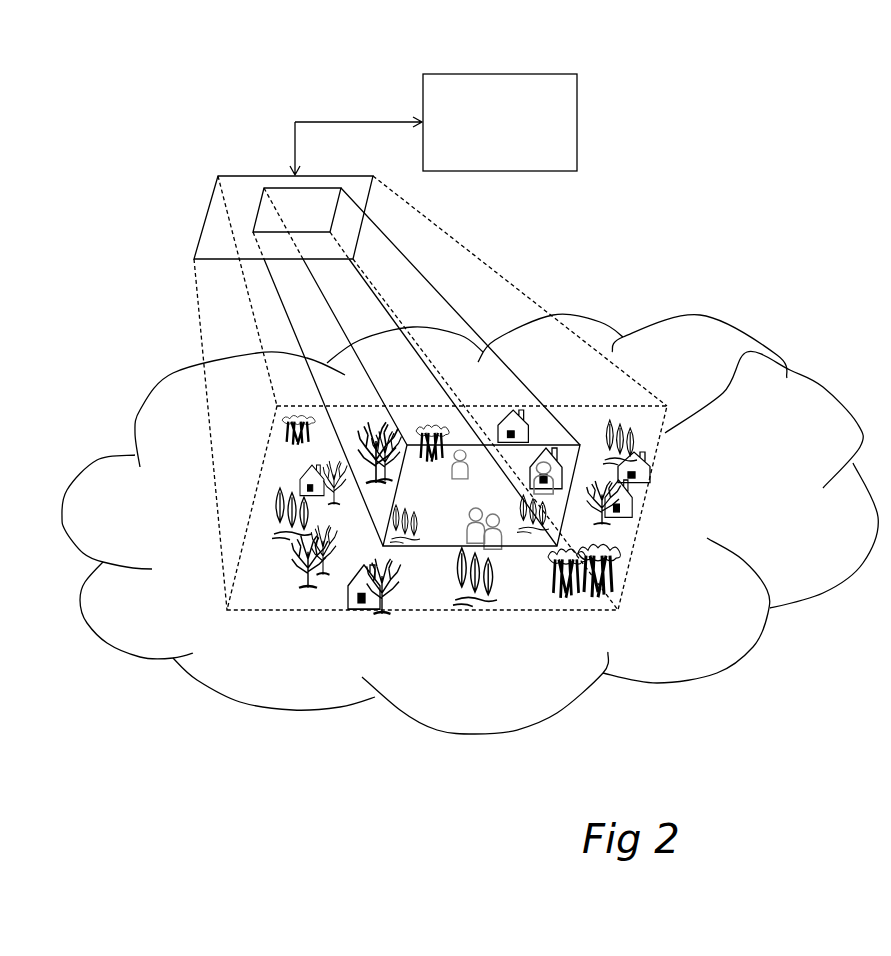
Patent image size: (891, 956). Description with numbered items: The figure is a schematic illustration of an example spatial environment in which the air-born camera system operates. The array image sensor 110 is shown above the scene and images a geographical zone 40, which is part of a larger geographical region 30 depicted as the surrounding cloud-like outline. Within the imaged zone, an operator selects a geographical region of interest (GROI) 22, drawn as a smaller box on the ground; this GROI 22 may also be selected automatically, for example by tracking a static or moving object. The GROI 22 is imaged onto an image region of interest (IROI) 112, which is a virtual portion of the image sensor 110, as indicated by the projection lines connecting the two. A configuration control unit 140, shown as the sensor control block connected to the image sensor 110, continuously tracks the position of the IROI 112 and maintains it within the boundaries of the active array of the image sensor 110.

The geographical region of interest (GROI) 22 is at (452, 547).
The geographical region 30 is at (135, 418).
The geographical zone 40 is at (770, 345).
The array image sensor 110 is at (217, 205).
The image region of interest (IROI) 112 is at (277, 188).
The configuration control unit 140 is at (578, 100).